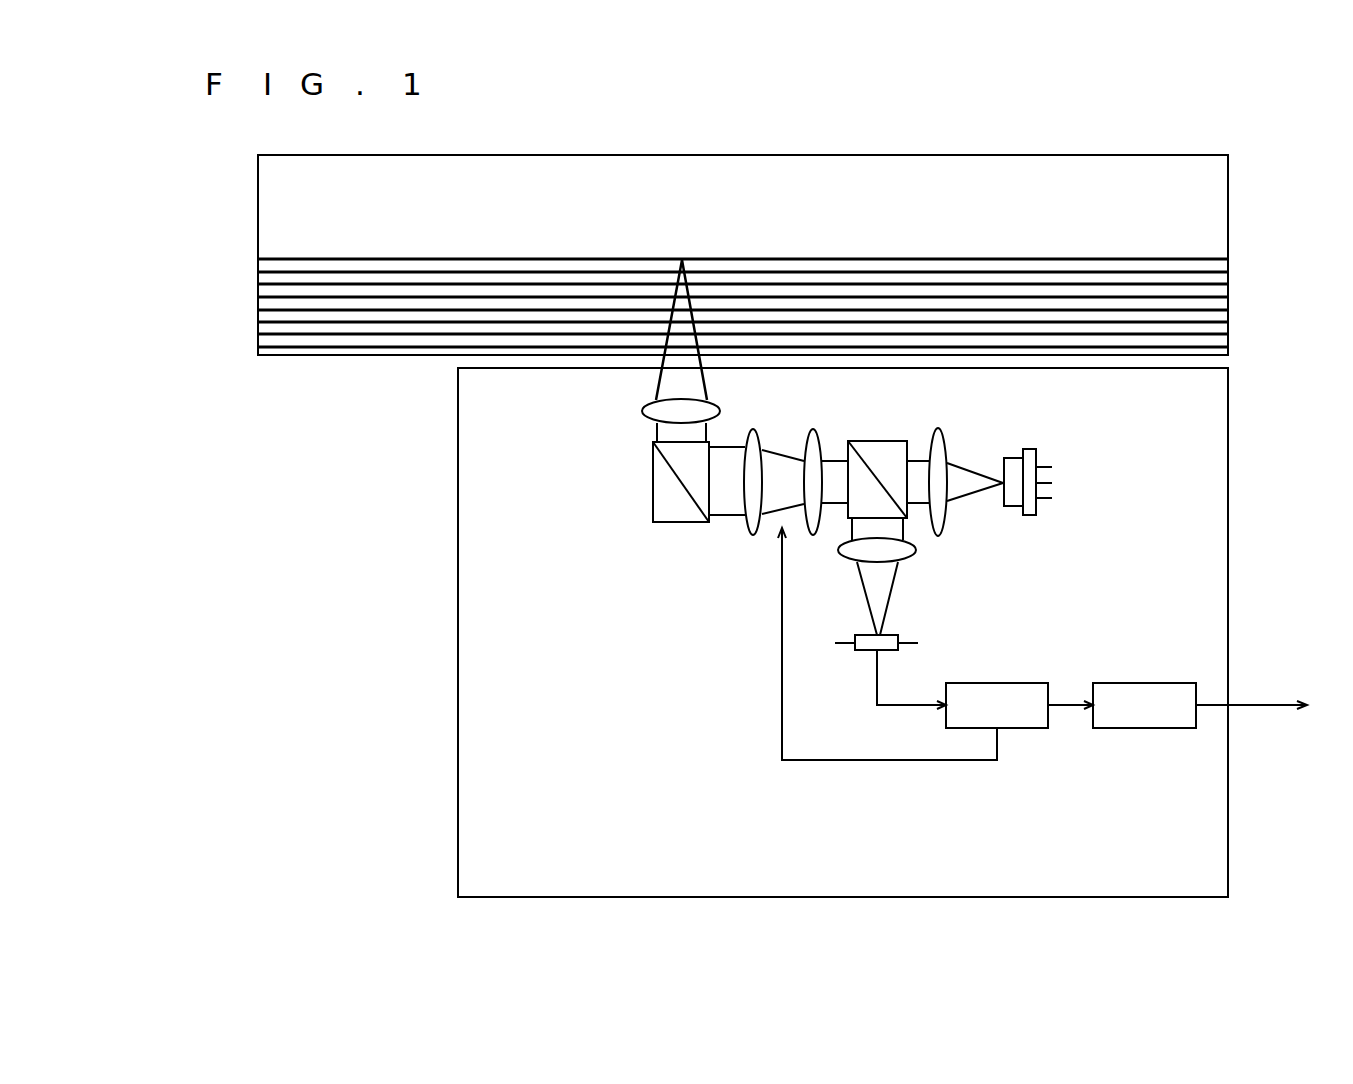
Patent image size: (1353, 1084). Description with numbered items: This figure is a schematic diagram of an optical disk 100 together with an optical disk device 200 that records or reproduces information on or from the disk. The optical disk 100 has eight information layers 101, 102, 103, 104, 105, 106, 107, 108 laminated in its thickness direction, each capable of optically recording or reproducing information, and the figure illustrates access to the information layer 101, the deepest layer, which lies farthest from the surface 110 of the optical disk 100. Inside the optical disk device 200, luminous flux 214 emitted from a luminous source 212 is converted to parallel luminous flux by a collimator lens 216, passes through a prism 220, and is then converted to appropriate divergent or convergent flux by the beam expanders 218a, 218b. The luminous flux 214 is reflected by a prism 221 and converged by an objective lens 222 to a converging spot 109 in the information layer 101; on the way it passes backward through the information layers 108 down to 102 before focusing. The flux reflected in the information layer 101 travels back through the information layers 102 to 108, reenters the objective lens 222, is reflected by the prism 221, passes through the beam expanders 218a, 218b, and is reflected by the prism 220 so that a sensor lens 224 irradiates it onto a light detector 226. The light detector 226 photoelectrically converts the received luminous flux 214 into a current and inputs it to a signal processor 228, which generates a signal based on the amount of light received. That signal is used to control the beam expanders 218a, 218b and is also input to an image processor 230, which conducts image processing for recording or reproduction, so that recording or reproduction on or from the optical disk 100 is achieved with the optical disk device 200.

The optical disk 100 is at (780, 153).
The information layer 101 is at (1236, 241).
The information layer 102 is at (1236, 257).
The information layer 103 is at (1235, 272).
The information layer 104 is at (1234, 287).
The information layer 105 is at (1236, 302).
The information layer 106 is at (1239, 329).
The information layer 107 is at (1239, 342).
The information layer 108 is at (1239, 356).
The converging spot 109 is at (682, 258).
The surface 110 is at (320, 366).
The optical disk device 200 is at (822, 898).
The luminous source 212 is at (1014, 465).
The luminous flux 214 is at (968, 486).
The collimator lens 216 is at (938, 428).
The beam expander 218a is at (813, 429).
The beam expander 218b is at (753, 429).
The prism 220 is at (880, 450).
The prism 221 is at (660, 483).
The objective lens 222 is at (648, 412).
The sensor lens 224 is at (907, 550).
The light detector 226 is at (860, 652).
The signal processor 228 is at (1036, 730).
The image processor 230 is at (1143, 730).